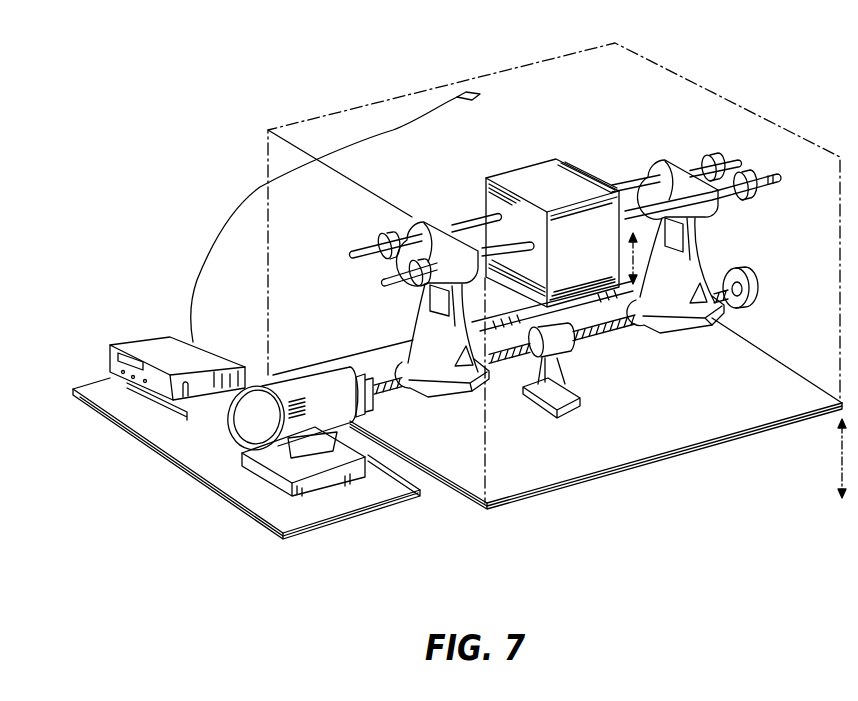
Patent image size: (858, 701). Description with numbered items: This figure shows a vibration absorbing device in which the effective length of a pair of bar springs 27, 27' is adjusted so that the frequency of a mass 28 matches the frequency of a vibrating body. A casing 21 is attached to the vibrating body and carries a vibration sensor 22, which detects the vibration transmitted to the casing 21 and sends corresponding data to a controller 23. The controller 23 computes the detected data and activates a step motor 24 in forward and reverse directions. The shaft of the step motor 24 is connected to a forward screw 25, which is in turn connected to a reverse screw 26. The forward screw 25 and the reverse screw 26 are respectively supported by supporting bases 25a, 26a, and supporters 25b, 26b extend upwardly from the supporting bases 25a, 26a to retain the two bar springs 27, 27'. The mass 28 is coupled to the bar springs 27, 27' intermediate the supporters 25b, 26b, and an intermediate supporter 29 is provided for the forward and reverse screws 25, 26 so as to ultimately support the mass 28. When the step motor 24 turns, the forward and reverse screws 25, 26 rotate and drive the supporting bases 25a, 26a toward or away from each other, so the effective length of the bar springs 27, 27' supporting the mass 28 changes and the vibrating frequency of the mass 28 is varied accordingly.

The casing 21 is at (532, 497).
The vibration sensor 22 is at (479, 97).
The controller 23 is at (148, 350).
The step motor 24 is at (243, 418).
The forward screw 25 is at (516, 356).
The supporting base 25a is at (444, 392).
The supporter 25b is at (428, 323).
The reverse screw 26 is at (638, 318).
The supporting base 26a is at (722, 315).
The supporter 26b is at (704, 252).
The bar spring 27 is at (730, 160).
The bar spring 27' is at (678, 146).
The mass 28 is at (574, 176).
The intermediate supporter 29 is at (576, 345).